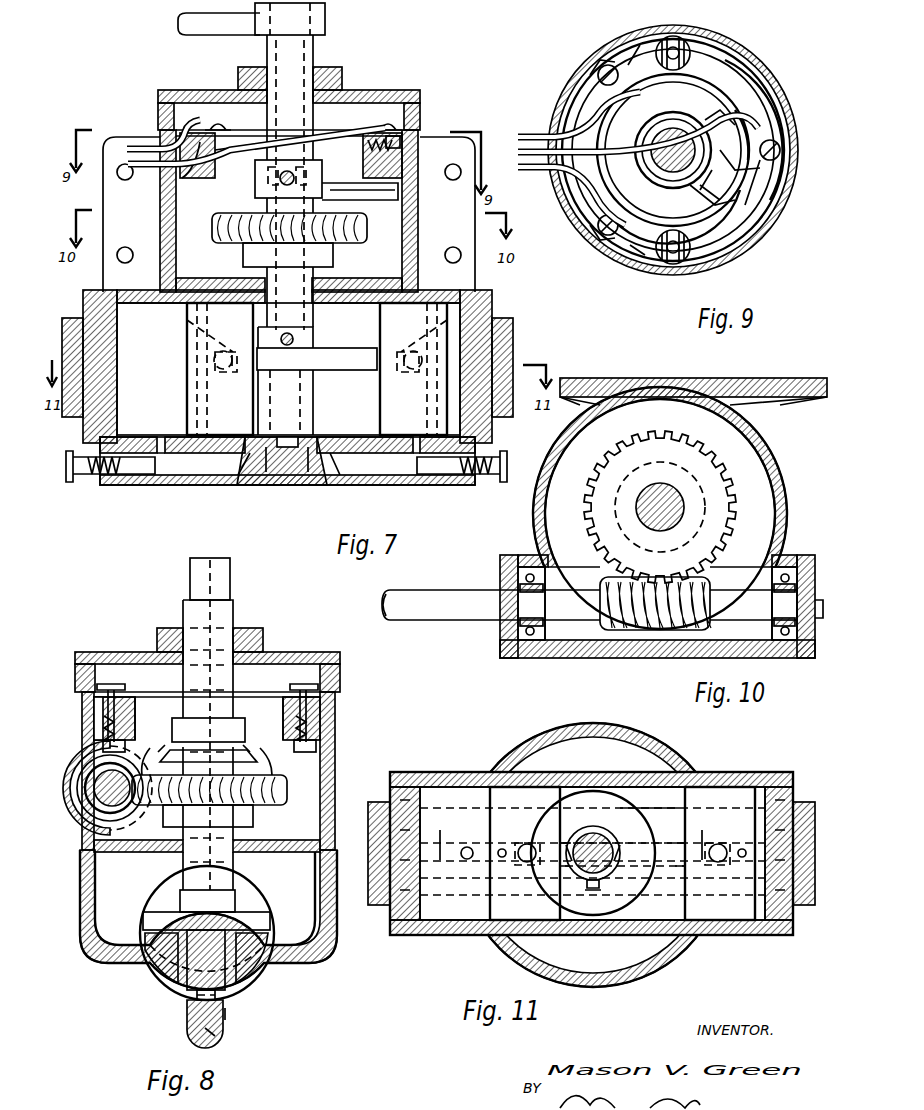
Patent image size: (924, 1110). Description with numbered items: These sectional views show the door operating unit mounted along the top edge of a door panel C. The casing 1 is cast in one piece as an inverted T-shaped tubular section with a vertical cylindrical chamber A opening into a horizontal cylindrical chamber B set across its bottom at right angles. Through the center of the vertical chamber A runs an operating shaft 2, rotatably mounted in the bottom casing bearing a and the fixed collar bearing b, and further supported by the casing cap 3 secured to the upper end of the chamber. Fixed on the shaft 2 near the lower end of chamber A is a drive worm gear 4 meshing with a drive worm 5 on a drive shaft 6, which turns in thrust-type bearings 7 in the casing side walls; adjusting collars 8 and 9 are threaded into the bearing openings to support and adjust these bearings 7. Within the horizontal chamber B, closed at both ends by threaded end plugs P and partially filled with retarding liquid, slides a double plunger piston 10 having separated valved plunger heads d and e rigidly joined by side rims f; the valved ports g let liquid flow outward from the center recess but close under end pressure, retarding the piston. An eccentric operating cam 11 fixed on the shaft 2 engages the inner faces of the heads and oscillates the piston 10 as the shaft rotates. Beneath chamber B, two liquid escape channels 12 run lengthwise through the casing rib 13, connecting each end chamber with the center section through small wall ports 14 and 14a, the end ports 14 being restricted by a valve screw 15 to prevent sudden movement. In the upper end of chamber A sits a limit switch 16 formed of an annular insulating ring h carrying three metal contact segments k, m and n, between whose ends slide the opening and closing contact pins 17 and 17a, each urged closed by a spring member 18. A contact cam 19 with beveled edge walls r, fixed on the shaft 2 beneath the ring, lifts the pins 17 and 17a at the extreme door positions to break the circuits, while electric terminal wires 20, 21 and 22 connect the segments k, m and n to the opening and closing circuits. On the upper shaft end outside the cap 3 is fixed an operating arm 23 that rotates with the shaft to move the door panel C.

In FIG. 7, the casing 1 is at (412, 290).
In FIG. 9, the casing 1 is at (797, 168).
In FIG. 10, the casing 1 is at (765, 435).
In FIG. 8, the casing 1 is at (336, 780).
In FIG. 11, the casing 1 is at (628, 815).
In FIG. 7, the operating shaft 2 is at (315, 52).
In FIG. 9, the operating shaft 2 is at (668, 170).
In FIG. 10, the operating shaft 2 is at (690, 497).
In FIG. 8, the operating shaft 2 is at (235, 618).
In FIG. 11, the operating shaft 2 is at (598, 848).
In FIG. 7, the casing cap 3 is at (421, 97).
In FIG. 8, the casing cap 3 is at (341, 660).
In FIG. 7, the drive worm gear 4 is at (372, 228).
In FIG. 10, the drive worm gear 4 is at (735, 535).
In FIG. 8, the drive worm gear 4 is at (287, 791).
In FIG. 10, the drive worm 5 is at (617, 630).
In FIG. 8, the drive worm 5 is at (100, 791).
In FIG. 10, the drive shaft 6 is at (475, 615).
In FIG. 10, the bearings 7 is at (530, 657).
In FIG. 8, the bearings 7 is at (82, 774).
In FIG. 10, the adjusting collar 8 is at (818, 620).
In FIG. 10, the adjusting collar 9 is at (500, 633).
In FIG. 11, the adjusting collar 9 is at (532, 843).
In FIG. 7, the double plunger piston 10 is at (262, 445).
In FIG. 8, the double plunger piston 10 is at (250, 900).
In FIG. 11, the double plunger piston 10 is at (680, 920).
In FIG. 7, the eccentric operating cam 11 is at (360, 348).
In FIG. 8, the eccentric operating cam 11 is at (270, 921).
In FIG. 11, the eccentric operating cam 11 is at (632, 848).
In FIG. 7, the liquid escape channels 12 is at (195, 478).
In FIG. 8, the liquid escape channels 12 is at (215, 1032).
In FIG. 11, the liquid escape channels 12 is at (442, 845).
In FIG. 7, the casing rib 13 is at (418, 480).
In FIG. 8, the casing rib 13 is at (224, 1014).
In FIG. 11, the casing rib 13 is at (430, 830).
In FIG. 7, the end wall ports 14 is at (100, 442).
In FIG. 11, the end wall ports 14 is at (467, 847).
In FIG. 7, the center wall ports 14a is at (250, 455).
In FIG. 8, the center wall ports 14a is at (196, 1015).
In FIG. 11, the center wall ports 14a is at (558, 845).
In FIG. 7, the valve screw 15 is at (66, 456).
In FIG. 7, the limit switch 16 is at (165, 178).
In FIG. 9, the limit switch 16 is at (728, 40).
In FIG. 8, the limit switch 16 is at (257, 758).
In FIG. 9, the opening contact pin 17 is at (668, 264).
In FIG. 8, the opening contact pin 17 is at (90, 686).
In FIG. 7, the closing contact pin 17a is at (300, 118).
In FIG. 9, the closing contact pin 17a is at (675, 36).
In FIG. 8, the closing contact pin 17a is at (322, 688).
In FIG. 8, the spring member 18 is at (97, 722).
In FIG. 7, the contact cam 19 is at (350, 200).
In FIG. 9, the contact cam 19 is at (745, 205).
In FIG. 8, the contact cam 19 is at (245, 760).
In FIG. 7, the electric terminal wire 20 is at (125, 164).
In FIG. 9, the electric terminal wire 20 is at (517, 153).
In FIG. 9, the electric terminal wire 21 is at (517, 168).
In FIG. 7, the electric terminal wire 22 is at (124, 150).
In FIG. 9, the electric terminal wire 22 is at (517, 138).
In FIG. 7, the operating arm 23 is at (326, 22).
In FIG. 7, the vertical cylindrical chamber A is at (418, 188).
In FIG. 9, the vertical cylindrical chamber A is at (775, 197).
In FIG. 10, the vertical cylindrical chamber A is at (787, 480).
In FIG. 8, the vertical cylindrical chamber A is at (335, 738).
In FIG. 11, the vertical cylindrical chamber A is at (640, 968).
In FIG. 7, the horizontal cylindrical chamber B is at (477, 284).
In FIG. 10, the horizontal cylindrical chamber B is at (815, 378).
In FIG. 8, the horizontal cylindrical chamber B is at (256, 986).
In FIG. 11, the horizontal cylindrical chamber B is at (745, 915).
In FIG. 7, the door panel C is at (344, 70).
In FIG. 8, the door panel C is at (252, 628).
In FIG. 7, the end plugs P is at (75, 318).
In FIG. 11, the end plugs P is at (392, 793).
In FIG. 7, the bottom casing bearing a is at (296, 442).
In FIG. 8, the bottom casing bearing a is at (190, 998).
In FIG. 7, the collar bearing b is at (404, 276).
In FIG. 10, the collar bearing b is at (760, 515).
In FIG. 8, the collar bearing b is at (308, 846).
In FIG. 7, the valved plunger head d is at (413, 369).
In FIG. 11, the valved plunger head d is at (720, 870).
In FIG. 7, the valved plunger head e is at (220, 369).
In FIG. 8, the valved plunger head e is at (197, 901).
In FIG. 11, the valved plunger head e is at (500, 912).
In FIG. 7, the side rims f is at (350, 432).
In FIG. 8, the side rims f is at (150, 950).
In FIG. 11, the side rims f is at (588, 790).
In FIG. 7, the valved ports g is at (240, 356).
In FIG. 7, the annular insulating ring h is at (418, 156).
In FIG. 9, the annular insulating ring h is at (706, 82).
In FIG. 8, the annular insulating ring h is at (322, 706).
In FIG. 7, the center contact segment k is at (418, 140).
In FIG. 9, the center contact segment k is at (760, 90).
In FIG. 9, the end contact segment m is at (640, 245).
In FIG. 8, the end contact segment m is at (92, 706).
In FIG. 7, the end contact segment n is at (168, 132).
In FIG. 9, the end contact segment n is at (640, 48).
In FIG. 8, the end contact segment n is at (322, 697).
In FIG. 7, the beveled edge walls r is at (418, 172).
In FIG. 9, the beveled edge walls r is at (730, 104).
In FIG. 8, the beveled edge walls r is at (204, 745).